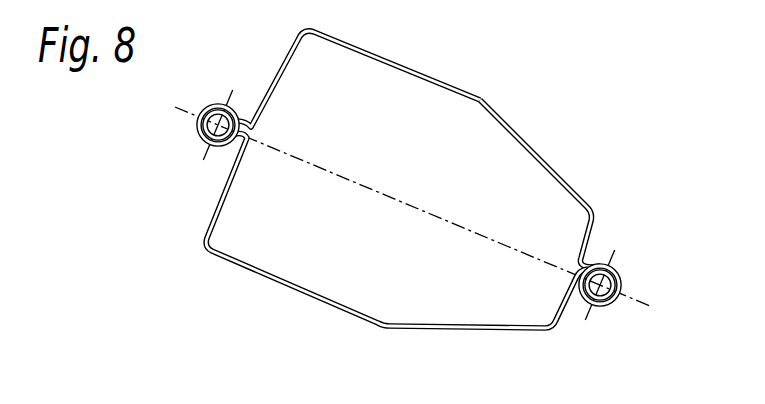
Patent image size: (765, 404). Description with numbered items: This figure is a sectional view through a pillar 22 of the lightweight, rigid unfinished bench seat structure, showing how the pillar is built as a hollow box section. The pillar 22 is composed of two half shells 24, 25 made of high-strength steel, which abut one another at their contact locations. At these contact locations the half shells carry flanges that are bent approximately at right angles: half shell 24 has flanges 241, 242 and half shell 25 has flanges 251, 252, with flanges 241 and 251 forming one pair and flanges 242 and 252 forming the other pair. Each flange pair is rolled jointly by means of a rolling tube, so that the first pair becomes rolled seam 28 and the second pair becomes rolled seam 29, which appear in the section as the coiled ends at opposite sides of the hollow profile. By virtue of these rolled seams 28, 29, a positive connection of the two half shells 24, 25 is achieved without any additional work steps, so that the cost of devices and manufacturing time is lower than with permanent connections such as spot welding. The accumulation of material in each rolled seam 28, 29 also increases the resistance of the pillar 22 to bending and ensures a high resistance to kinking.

The pillar 22 is at (428, 74).
The half shell 24 is at (520, 142).
The half shell 25 is at (313, 300).
The flange 241 is at (600, 262).
The flange 242 is at (212, 103).
The flange 251 is at (615, 268).
The flange 252 is at (237, 100).
The rolled seam 28 is at (607, 307).
The rolled seam 29 is at (202, 139).